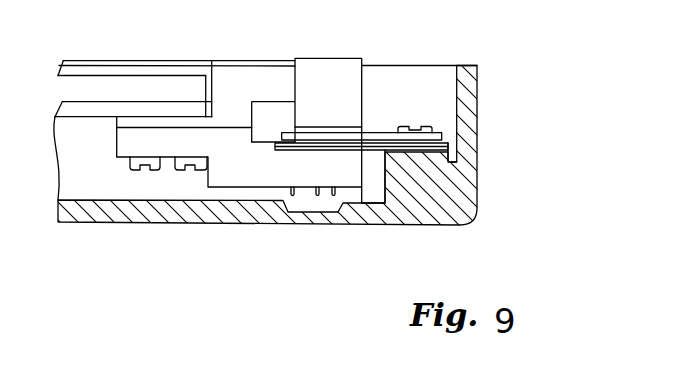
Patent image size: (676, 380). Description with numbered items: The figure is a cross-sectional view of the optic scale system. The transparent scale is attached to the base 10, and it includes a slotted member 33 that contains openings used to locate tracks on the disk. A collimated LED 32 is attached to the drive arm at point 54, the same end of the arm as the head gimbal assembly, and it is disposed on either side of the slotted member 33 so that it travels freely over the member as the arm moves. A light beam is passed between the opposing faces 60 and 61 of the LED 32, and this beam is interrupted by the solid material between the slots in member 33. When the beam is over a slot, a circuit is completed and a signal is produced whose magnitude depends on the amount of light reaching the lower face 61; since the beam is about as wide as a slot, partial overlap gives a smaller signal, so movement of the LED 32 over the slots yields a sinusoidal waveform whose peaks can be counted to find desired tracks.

The base 10 is at (468, 178).
The collimated LED 32 is at (310, 105).
The slotted member 33 is at (388, 131).
The point 54 is at (173, 173).
The face 60 is at (345, 128).
The lower face 61 is at (312, 140).